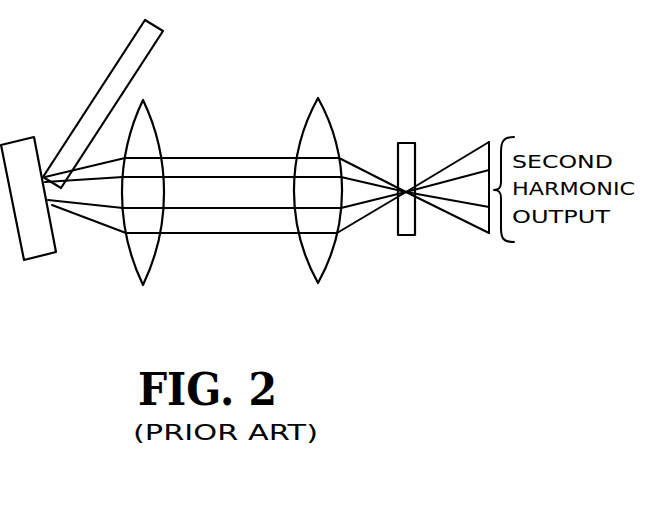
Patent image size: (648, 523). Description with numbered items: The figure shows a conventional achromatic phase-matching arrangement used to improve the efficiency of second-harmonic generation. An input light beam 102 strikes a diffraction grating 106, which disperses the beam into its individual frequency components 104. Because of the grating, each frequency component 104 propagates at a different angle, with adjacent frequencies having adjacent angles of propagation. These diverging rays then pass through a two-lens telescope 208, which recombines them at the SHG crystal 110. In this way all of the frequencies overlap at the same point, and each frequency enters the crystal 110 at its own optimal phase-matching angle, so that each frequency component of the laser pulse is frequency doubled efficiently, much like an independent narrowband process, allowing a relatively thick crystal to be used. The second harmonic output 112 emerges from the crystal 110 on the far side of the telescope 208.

The input light beam 102 is at (124, 52).
The frequency components 104 is at (91, 174).
The diffraction grating 106 is at (22, 138).
The SHG crystal 110 is at (410, 145).
The second harmonic output beam 112 is at (473, 228).
The two-lens telescope 208 is at (336, 290).